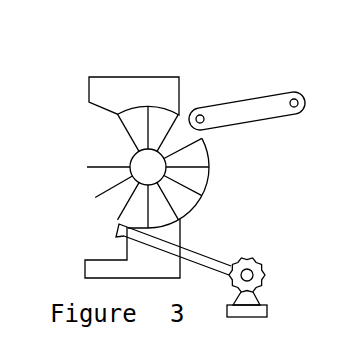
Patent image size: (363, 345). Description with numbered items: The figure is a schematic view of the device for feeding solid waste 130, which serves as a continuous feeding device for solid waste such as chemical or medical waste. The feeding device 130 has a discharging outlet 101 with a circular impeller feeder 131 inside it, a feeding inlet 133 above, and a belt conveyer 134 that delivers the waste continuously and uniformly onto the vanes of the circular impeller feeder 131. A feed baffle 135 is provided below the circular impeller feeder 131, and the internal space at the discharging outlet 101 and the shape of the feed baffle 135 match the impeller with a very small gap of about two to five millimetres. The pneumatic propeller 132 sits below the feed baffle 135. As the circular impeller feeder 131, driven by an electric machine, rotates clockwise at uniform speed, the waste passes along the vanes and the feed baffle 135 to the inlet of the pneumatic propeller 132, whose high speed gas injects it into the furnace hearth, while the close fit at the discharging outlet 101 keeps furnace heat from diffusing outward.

The discharging outlet 101 is at (95, 245).
The device for feeding solid waste 130 is at (111, 167).
The circular impeller feeder 131 is at (94, 129).
The pneumatic propeller 132 is at (196, 258).
The feeding inlet 133 is at (164, 72).
The belt conveyer 134 is at (248, 76).
The feed baffle 135 is at (205, 183).